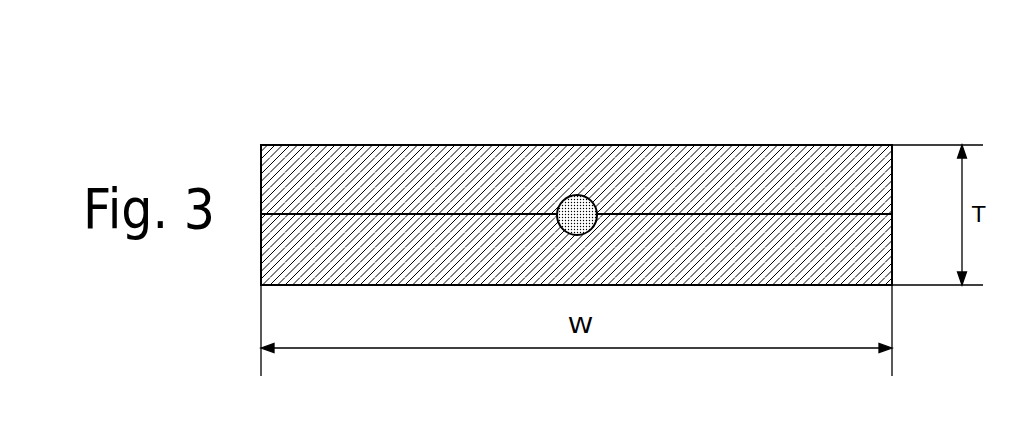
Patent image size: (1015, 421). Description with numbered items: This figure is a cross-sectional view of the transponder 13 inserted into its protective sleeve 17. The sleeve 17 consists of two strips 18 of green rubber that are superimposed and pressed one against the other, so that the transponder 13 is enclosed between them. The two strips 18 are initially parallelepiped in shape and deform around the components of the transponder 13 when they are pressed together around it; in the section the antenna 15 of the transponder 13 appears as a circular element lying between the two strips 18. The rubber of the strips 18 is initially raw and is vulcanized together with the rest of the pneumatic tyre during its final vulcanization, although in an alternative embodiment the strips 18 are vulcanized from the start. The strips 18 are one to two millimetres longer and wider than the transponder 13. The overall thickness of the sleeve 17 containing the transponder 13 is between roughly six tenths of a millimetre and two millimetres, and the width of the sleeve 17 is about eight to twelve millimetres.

The transponder 13 is at (187, 89).
The antenna 15 is at (577, 212).
The sleeve 17 is at (319, 108).
The strips of green rubber 18 is at (856, 177).